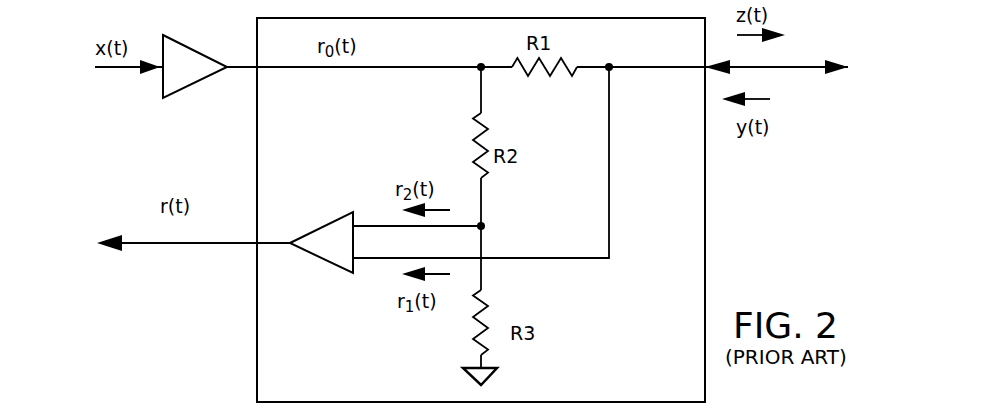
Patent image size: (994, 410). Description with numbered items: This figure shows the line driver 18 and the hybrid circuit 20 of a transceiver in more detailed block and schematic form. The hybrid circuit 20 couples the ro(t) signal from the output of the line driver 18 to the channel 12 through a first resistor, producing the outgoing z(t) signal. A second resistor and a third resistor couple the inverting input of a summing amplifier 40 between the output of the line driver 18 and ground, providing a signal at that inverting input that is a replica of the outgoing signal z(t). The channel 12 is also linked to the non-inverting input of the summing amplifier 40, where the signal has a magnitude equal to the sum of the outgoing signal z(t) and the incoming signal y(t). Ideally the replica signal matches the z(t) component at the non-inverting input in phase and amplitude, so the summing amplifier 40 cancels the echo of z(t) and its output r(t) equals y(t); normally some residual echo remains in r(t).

The channel 12 is at (785, 68).
The line driver 18 is at (193, 73).
The hybrid circuit 20 is at (200, 320).
The summing amplifier 40 is at (322, 227).